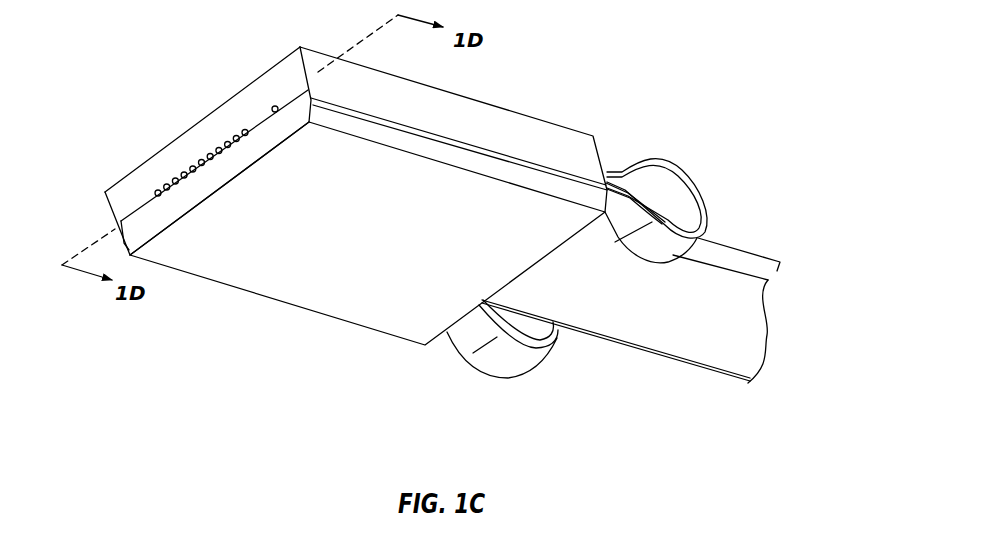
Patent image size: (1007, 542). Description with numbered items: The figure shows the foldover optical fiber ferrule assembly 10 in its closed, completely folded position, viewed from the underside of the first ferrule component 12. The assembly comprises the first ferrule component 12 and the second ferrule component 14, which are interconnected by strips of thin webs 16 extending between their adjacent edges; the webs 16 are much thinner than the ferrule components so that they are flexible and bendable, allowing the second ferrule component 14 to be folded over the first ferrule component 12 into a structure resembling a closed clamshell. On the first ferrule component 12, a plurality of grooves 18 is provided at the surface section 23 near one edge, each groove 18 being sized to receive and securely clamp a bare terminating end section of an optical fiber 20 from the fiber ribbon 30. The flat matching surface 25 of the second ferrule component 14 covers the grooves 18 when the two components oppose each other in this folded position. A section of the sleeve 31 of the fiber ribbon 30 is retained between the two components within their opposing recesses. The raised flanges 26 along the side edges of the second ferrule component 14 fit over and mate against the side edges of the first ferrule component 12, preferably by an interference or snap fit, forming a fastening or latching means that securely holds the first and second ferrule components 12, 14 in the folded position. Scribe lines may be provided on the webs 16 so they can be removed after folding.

The foldover optical fiber ferrule assembly 10 is at (646, 93).
The first ferrule component 12 is at (372, 312).
The second ferrule component 14 is at (322, 147).
The webs 16 is at (687, 172).
The groove 18 is at (143, 203).
The optical fiber 20 is at (203, 153).
The surface section 23 is at (128, 215).
The matching surface 25 is at (267, 108).
The raised flanges 26 is at (327, 97).
The fiber ribbon 30 is at (632, 311).
The sleeve 31 is at (710, 353).